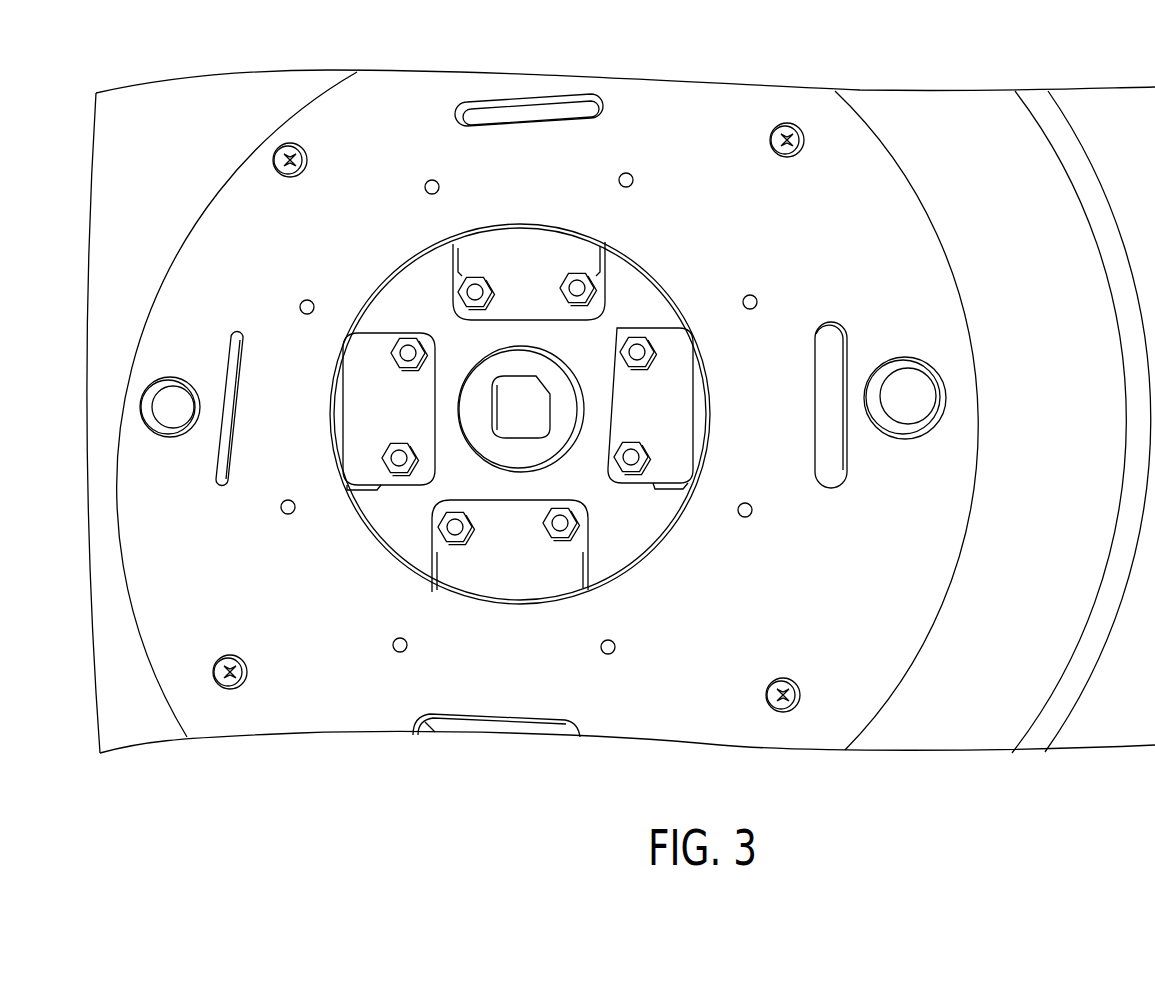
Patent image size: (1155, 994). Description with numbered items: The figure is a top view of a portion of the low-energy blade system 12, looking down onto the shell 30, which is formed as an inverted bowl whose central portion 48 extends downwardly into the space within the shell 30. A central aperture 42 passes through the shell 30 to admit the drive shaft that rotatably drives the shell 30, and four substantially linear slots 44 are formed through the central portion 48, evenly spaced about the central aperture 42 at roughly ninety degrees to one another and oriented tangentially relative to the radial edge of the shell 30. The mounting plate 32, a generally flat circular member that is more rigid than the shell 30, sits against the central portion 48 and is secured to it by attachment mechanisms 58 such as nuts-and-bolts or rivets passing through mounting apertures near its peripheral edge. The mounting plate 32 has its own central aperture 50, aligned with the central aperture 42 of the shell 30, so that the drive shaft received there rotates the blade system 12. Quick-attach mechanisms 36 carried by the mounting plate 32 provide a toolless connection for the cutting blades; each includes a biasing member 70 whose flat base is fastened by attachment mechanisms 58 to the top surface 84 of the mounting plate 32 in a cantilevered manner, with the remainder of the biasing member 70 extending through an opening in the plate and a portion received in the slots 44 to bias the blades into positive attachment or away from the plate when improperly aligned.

The shell 30 is at (176, 95).
The central portion 48 is at (385, 92).
The slots 44 is at (562, 100).
The low-energy blade system 12 is at (952, 93).
The quick-attach mechanisms 36 is at (1120, 100).
The central aperture 42 is at (405, 265).
The mounting plate 32 is at (637, 282).
The biasing member 70 is at (531, 242).
The attachment mechanism 58 is at (652, 358).
The central aperture 50 is at (510, 405).
The top surface 84 is at (615, 502).